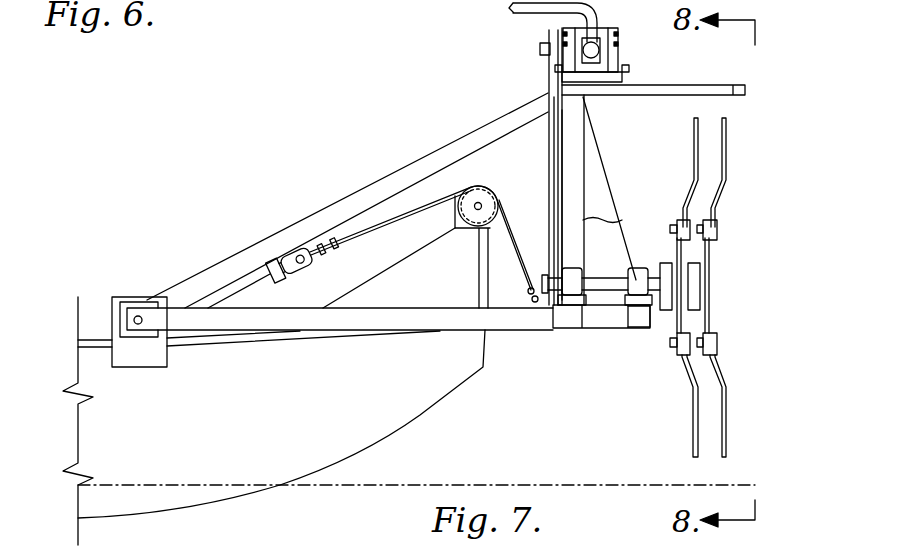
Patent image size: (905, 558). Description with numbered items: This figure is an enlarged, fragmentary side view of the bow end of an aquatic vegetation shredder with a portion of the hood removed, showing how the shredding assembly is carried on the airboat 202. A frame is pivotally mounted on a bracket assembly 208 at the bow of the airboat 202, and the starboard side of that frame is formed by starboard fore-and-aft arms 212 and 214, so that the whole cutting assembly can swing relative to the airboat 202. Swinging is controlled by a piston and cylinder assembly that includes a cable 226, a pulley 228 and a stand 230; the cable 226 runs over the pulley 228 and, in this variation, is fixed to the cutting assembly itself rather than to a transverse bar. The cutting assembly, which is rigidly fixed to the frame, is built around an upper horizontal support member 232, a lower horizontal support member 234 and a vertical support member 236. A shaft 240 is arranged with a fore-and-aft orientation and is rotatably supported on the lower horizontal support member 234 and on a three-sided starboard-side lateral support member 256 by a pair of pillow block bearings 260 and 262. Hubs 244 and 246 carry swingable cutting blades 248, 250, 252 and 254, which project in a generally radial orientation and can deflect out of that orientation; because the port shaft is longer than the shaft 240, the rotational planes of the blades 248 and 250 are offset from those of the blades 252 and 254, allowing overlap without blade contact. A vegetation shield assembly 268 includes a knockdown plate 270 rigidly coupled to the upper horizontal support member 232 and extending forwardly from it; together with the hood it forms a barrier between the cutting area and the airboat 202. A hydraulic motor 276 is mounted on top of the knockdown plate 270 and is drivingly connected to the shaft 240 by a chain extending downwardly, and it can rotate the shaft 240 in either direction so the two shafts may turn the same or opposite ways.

The airboat 202 is at (103, 437).
The bracket assembly 208 is at (140, 358).
The starboard fore-and-aft arm 212 is at (354, 318).
The starboard fore-and-aft arm 214 is at (220, 268).
The cable 226 is at (383, 223).
The pulley 228 is at (483, 196).
The stand 230 is at (410, 295).
The upper horizontal support member 232 is at (567, 93).
The lower horizontal support member 234 is at (570, 323).
The vertical support member 236 is at (573, 153).
The shaft 240 is at (607, 288).
The hub 244 is at (676, 292).
The hub 246 is at (702, 282).
The cutting blade 248 is at (695, 423).
The cutting blade 250 is at (696, 128).
The cutting blade 252 is at (727, 388).
The cutting blade 254 is at (727, 152).
The starboard-side lateral support member 256 is at (620, 320).
The pillow block bearing 260 is at (640, 280).
The pillow block bearing 262 is at (568, 282).
The vegetation shield assembly 268 is at (600, 114).
The knockdown plate 270 is at (667, 87).
The hydraulic motor 276 is at (603, 33).